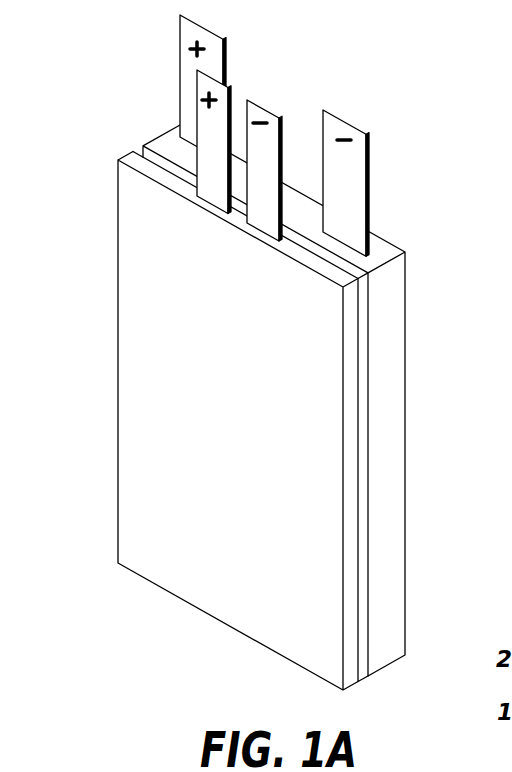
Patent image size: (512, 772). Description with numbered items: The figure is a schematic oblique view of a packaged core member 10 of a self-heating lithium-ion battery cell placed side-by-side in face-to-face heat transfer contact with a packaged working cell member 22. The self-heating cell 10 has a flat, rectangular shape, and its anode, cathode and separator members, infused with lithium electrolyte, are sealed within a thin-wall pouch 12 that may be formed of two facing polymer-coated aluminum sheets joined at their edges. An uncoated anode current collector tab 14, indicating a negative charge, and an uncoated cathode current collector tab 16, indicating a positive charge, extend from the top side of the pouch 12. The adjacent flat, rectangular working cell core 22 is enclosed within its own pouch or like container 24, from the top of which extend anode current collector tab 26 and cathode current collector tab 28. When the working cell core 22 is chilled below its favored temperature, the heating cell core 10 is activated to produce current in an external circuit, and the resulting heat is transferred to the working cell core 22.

The packaged core member of self-heating lithium-ion battery cell 10 is at (100, 398).
The pouch 12 is at (133, 495).
The anode current collector tab 14 is at (266, 146).
The cathode current collector tab 16 is at (206, 161).
The packaged working cell member 22 is at (420, 425).
The pouch or like container 24 is at (390, 525).
The anode current collector tab 26 is at (353, 170).
The cathode current collector tab 28 is at (182, 80).